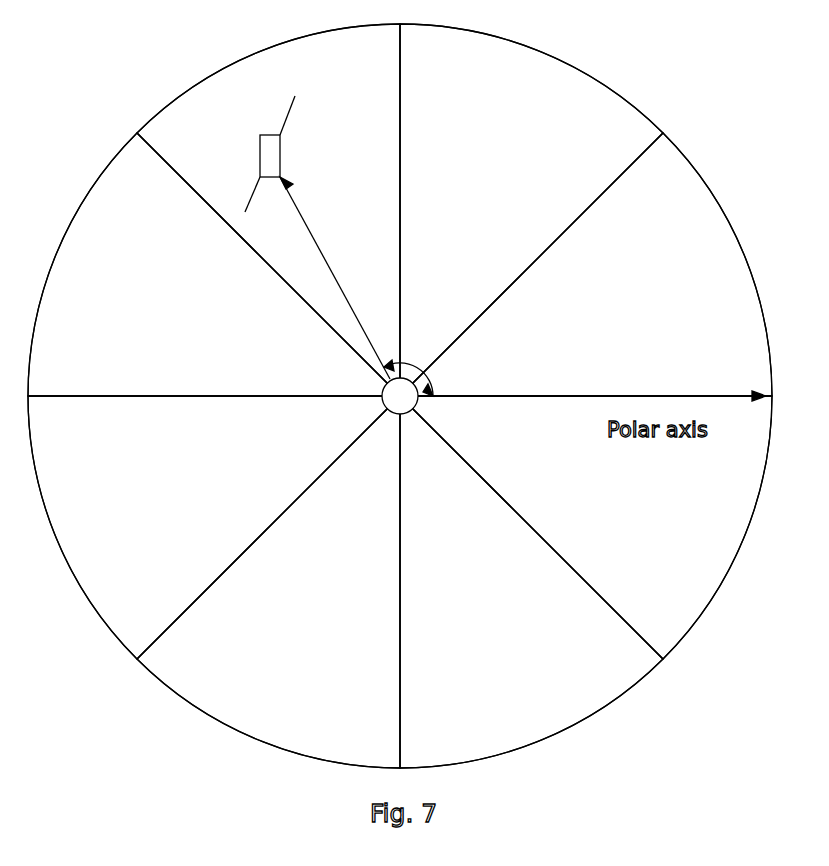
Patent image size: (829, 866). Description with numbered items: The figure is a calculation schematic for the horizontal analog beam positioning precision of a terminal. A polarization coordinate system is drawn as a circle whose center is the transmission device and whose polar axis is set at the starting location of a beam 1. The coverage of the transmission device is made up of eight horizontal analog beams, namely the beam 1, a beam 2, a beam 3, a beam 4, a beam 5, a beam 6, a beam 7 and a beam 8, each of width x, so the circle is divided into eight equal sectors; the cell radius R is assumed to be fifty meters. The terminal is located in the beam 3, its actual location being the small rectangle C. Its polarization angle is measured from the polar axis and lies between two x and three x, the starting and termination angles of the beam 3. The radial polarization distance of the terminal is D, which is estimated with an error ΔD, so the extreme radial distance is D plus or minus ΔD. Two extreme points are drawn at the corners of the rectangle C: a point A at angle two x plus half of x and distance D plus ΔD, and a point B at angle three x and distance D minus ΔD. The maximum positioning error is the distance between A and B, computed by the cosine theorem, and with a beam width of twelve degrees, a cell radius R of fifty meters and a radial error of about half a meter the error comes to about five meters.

The beam 1 is at (592, 264).
The beam 2 is at (531, 203).
The beam 3 is at (268, 203).
The beam 4 is at (207, 264).
The beam 5 is at (207, 527).
The beam 6 is at (268, 588).
The beam 7 is at (531, 588).
The beam 8 is at (592, 527).
The cell radius R is at (592, 381).
The radial polarization distance D is at (335, 278).
The actual location of the terminal C is at (261, 149).
The point A is at (294, 103).
The point B is at (244, 199).